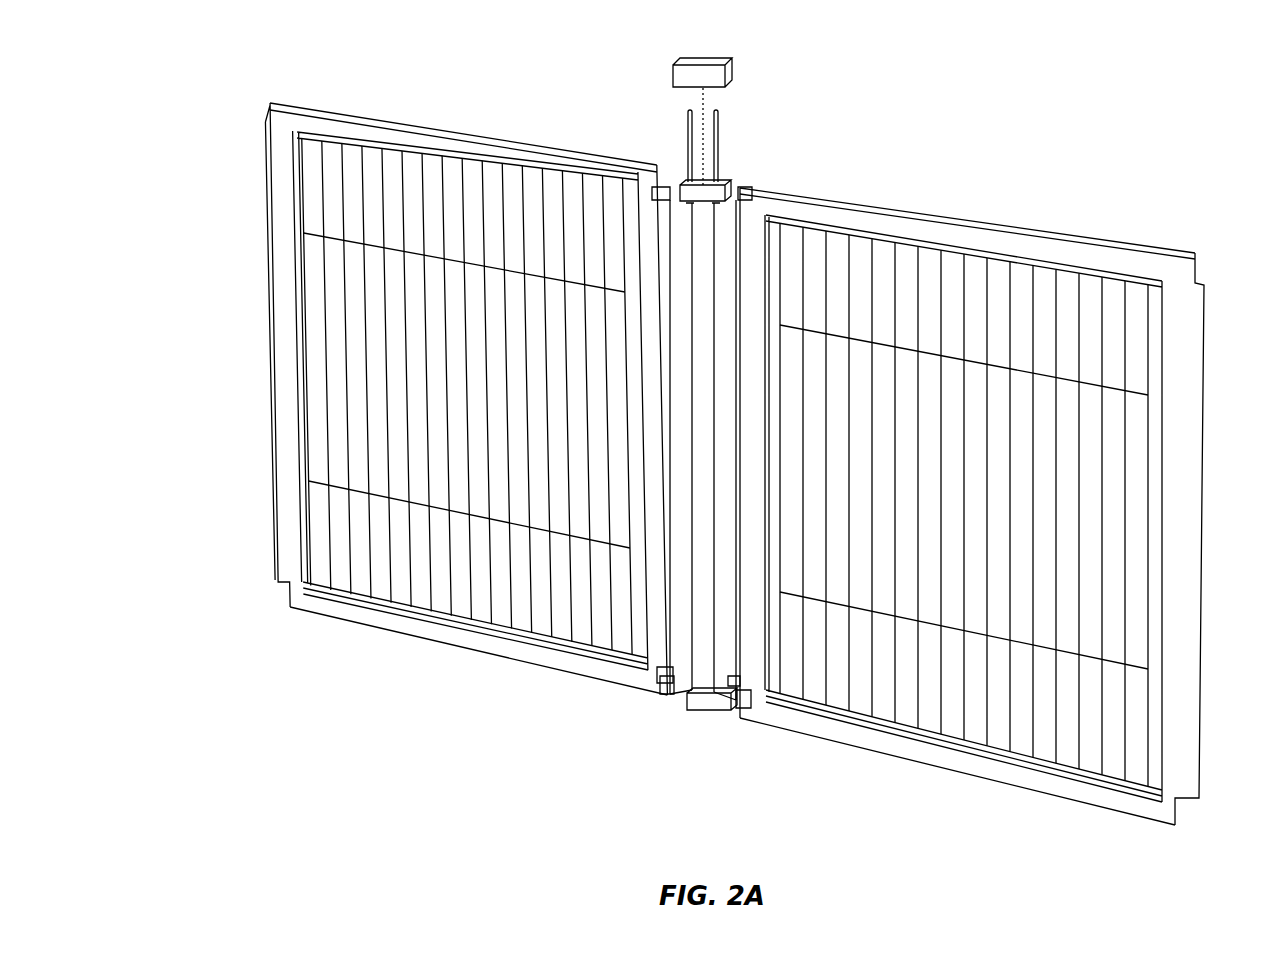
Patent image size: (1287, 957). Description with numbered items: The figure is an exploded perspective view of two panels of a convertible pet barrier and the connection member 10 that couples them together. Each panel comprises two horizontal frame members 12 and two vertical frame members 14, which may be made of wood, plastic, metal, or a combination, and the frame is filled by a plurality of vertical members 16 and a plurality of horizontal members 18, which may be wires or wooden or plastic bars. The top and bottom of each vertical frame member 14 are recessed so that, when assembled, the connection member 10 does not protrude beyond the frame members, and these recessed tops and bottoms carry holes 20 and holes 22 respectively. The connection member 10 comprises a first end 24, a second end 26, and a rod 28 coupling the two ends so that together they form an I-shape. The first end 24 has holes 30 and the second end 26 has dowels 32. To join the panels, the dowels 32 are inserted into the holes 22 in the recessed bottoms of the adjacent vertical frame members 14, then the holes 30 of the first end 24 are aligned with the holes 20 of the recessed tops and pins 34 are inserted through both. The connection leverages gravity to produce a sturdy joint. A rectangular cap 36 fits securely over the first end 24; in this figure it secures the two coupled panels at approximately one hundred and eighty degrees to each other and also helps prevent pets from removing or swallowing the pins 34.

The connection member 10 is at (658, 86).
The horizontal frame members 12 is at (440, 112).
The vertical frame members 14 is at (270, 320).
The vertical members 16 is at (432, 570).
The horizontal members 18 is at (310, 500).
The holes 20 is at (661, 186).
The holes 22 is at (665, 700).
The first end 24 is at (727, 188).
The second end 26 is at (712, 722).
The rod 28 is at (695, 470).
The holes 30 is at (688, 180).
The dowels 32 is at (690, 678).
The pins 34 is at (688, 118).
The cap 36 is at (712, 62).